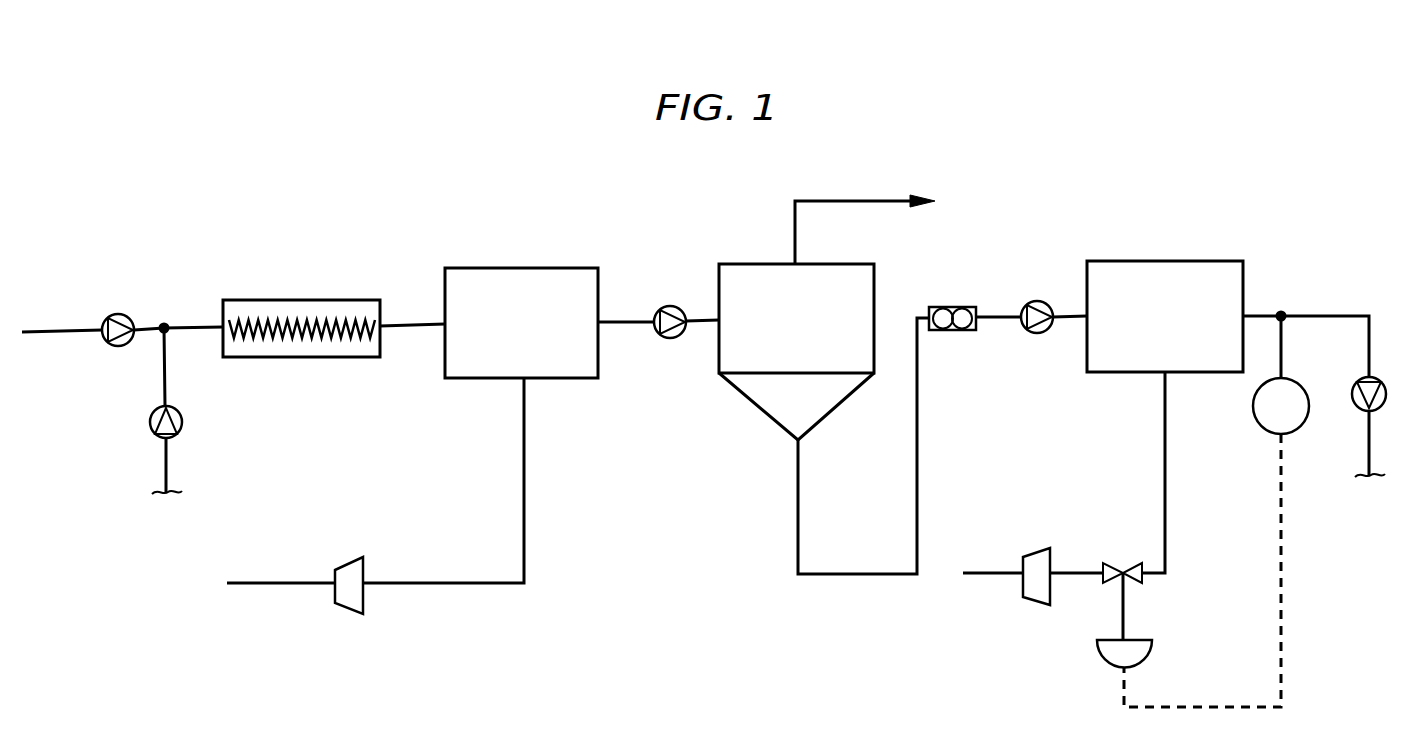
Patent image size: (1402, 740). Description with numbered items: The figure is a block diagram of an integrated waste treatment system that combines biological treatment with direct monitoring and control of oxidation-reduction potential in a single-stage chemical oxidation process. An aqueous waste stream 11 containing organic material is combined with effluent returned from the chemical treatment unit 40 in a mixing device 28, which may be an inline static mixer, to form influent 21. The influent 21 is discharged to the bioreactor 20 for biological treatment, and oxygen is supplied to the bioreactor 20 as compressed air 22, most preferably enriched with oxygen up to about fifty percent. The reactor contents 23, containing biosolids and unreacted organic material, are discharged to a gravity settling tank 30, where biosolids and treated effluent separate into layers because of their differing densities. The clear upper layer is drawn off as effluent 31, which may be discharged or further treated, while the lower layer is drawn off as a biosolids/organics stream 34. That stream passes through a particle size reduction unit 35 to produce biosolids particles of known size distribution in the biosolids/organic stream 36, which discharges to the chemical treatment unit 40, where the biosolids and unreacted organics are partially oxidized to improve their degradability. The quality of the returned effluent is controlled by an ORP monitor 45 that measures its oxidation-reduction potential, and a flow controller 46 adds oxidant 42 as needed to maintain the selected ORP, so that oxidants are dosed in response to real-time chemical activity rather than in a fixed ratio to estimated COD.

The aqueous waste stream 11 is at (191, 324).
The bioreactor 20 is at (515, 268).
The influent 21 is at (407, 322).
The compressed air 22 is at (524, 497).
The reactor contents 23 is at (612, 320).
The mixing device 28 is at (297, 300).
The gravity settling tank 30 is at (752, 264).
The effluent 31 is at (855, 200).
The biosolids/organics stream 34 is at (857, 576).
The particle size reduction unit 35 is at (947, 307).
The biosolids/organic stream 36 is at (983, 315).
The chemical treatment unit 40 is at (1157, 261).
The oxidant 42 is at (1165, 457).
The ORP monitor 45 is at (1298, 385).
The flow controller 46 is at (1105, 660).